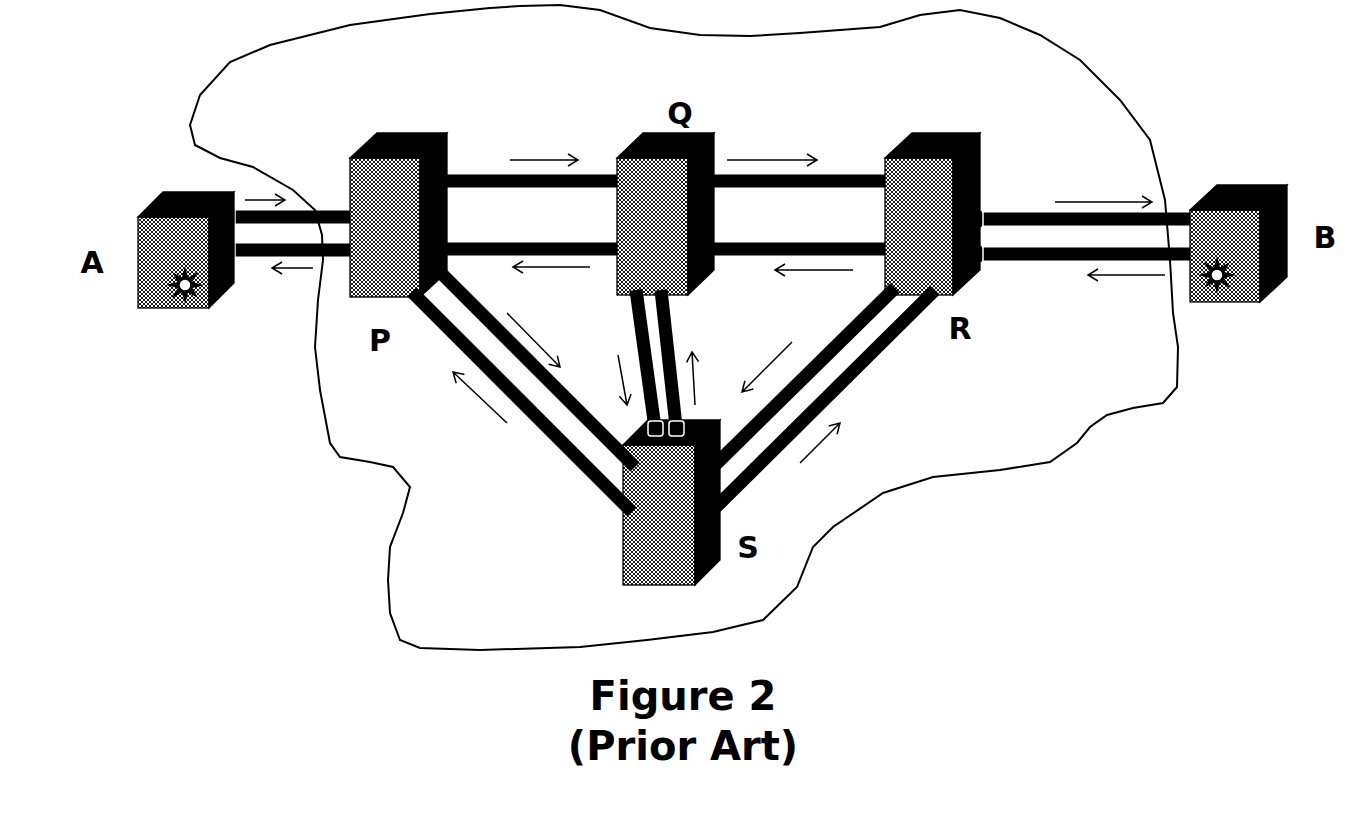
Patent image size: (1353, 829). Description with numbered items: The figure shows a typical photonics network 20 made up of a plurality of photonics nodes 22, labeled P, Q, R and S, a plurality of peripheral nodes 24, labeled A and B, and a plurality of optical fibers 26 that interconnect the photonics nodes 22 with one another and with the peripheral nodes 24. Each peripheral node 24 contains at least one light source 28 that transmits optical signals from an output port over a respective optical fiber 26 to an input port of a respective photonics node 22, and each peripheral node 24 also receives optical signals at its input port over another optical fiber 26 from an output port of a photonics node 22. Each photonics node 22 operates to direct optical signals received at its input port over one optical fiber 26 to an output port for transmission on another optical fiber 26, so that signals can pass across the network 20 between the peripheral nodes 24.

The photonics network 20 is at (370, 462).
The photonics nodes 22 is at (492, 622).
The peripheral nodes 24 is at (60, 180).
The optical fibers 26 is at (1118, 340).
The light source 28 is at (100, 372).